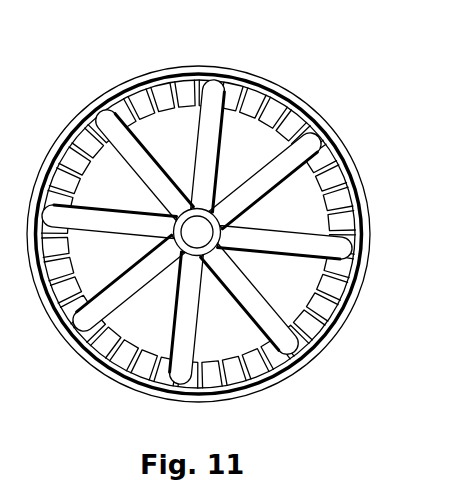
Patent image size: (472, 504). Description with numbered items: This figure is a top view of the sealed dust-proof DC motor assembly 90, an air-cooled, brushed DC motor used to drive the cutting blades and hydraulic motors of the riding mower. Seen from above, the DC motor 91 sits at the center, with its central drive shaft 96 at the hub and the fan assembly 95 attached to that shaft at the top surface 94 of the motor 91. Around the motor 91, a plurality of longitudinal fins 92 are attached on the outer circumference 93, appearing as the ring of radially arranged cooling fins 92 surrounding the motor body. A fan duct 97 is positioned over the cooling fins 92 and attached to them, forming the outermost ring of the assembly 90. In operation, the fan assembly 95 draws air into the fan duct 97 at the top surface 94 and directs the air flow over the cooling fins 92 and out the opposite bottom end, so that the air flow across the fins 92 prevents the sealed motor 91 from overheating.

The sealed dust-proof DC motor assembly 90 is at (237, 218).
The DC motor 91 is at (310, 221).
The longitudinal fins 92 is at (260, 93).
The outer circumference 93 is at (176, 94).
The top surface 94 is at (163, 140).
The fan assembly 95 is at (332, 222).
The central drive shaft 96 is at (193, 231).
The fan duct 97 is at (370, 248).